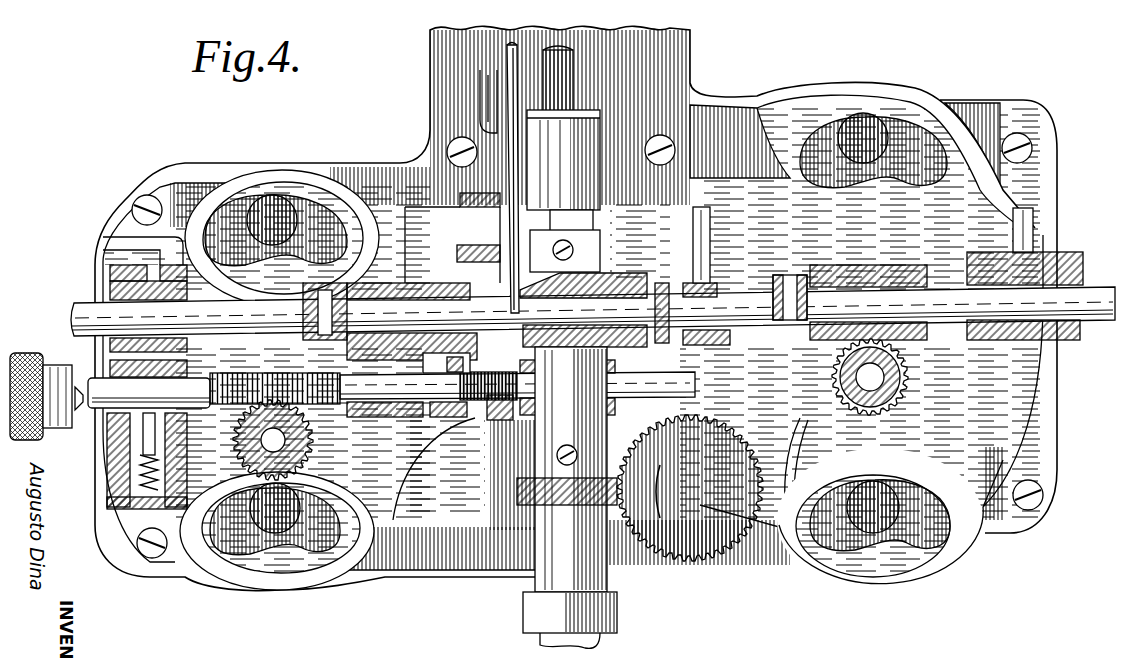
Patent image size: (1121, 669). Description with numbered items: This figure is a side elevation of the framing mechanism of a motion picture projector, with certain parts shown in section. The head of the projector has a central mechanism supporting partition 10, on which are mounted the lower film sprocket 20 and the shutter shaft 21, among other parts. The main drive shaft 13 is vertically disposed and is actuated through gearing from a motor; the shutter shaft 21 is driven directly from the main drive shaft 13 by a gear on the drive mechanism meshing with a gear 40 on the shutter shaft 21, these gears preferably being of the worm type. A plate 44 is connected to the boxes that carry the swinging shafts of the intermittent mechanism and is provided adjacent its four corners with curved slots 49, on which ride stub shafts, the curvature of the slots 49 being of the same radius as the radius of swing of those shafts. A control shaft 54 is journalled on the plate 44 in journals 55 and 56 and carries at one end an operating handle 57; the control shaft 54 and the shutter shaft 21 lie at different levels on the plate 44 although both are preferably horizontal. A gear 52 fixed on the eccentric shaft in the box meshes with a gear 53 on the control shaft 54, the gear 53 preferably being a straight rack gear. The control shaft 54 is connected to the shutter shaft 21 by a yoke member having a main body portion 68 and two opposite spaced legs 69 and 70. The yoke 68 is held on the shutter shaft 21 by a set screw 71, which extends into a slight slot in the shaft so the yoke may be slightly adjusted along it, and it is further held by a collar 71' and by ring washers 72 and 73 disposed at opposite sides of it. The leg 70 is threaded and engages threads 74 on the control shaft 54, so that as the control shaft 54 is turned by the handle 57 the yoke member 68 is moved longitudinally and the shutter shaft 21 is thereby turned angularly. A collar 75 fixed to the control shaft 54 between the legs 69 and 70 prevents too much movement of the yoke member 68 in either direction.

The central mechanism supporting partition 10 is at (680, 60).
The main drive shaft 13 is at (575, 85).
The lower film sprocket 20 is at (673, 548).
The shutter shaft 21 is at (247, 307).
The gear on the shutter shaft 40 is at (590, 272).
The plate 44 is at (572, 312).
The curved slots 49 is at (252, 262).
The gear 52 is at (242, 452).
The gear 53 is at (246, 378).
The control shaft 54 is at (303, 414).
The journal 55 is at (188, 370).
The journal 56 is at (668, 394).
The operating handle 57 is at (40, 352).
The yoke member main body portion 68 is at (420, 282).
The leg of yoke 69 is at (405, 414).
The threaded leg of yoke 70 is at (478, 416).
The set screw 71 is at (452, 238).
The collar 71' is at (385, 375).
The ring washer 72 is at (343, 283).
The ring washer 73 is at (511, 265).
The threads on the shaft 74 is at (433, 422).
The collar 75 is at (413, 422).